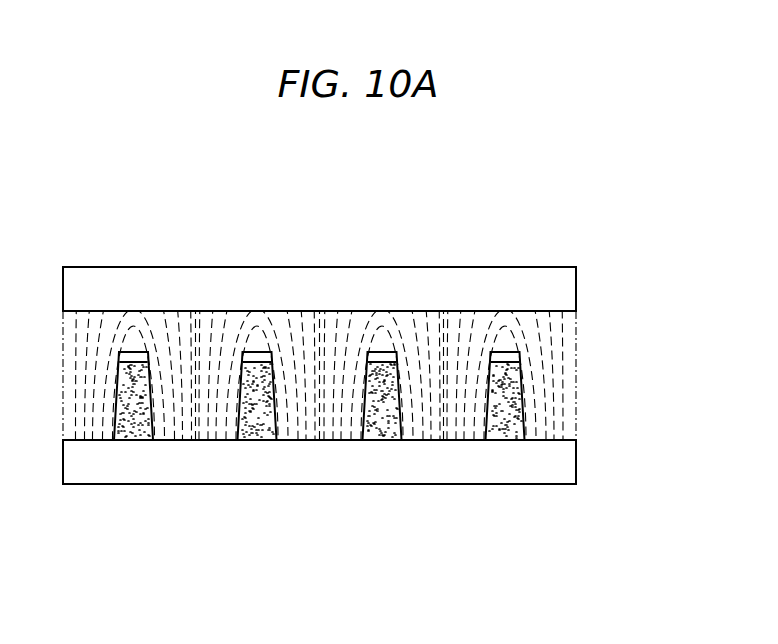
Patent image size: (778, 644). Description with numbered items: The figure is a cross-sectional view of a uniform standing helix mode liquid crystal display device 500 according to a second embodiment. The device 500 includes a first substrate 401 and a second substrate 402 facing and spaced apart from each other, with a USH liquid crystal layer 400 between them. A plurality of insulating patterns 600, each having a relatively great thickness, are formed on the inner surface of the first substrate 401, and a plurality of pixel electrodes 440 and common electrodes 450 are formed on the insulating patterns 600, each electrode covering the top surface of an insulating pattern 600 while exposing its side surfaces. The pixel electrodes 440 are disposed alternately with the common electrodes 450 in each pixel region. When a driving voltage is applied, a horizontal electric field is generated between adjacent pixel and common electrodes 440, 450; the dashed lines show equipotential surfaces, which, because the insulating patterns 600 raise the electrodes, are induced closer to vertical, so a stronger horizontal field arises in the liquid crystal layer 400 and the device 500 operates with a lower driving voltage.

The uniform standing helix mode liquid crystal display device 500 is at (553, 222).
The second substrate 402 is at (558, 289).
The first substrate 401 is at (558, 467).
The USH liquid crystal layer 400 is at (558, 358).
The pixel electrode 440 is at (131, 352).
The common electrode 450 is at (257, 352).
The insulating pattern 600 is at (522, 407).